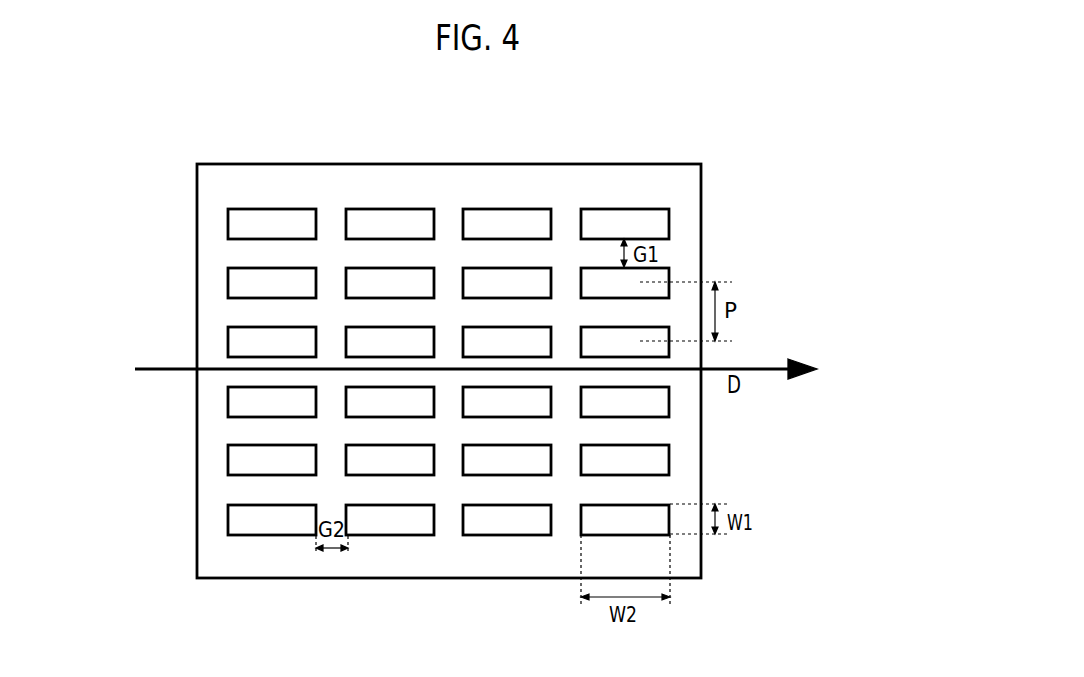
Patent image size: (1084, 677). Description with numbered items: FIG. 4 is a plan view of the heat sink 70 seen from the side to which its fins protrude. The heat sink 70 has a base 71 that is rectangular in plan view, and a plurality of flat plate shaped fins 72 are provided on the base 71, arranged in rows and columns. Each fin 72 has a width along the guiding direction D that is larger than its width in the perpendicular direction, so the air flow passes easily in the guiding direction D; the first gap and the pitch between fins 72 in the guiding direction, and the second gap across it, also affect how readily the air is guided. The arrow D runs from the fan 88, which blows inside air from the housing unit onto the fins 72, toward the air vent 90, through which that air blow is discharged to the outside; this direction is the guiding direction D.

The heat sink 70 is at (637, 131).
The base 71 is at (215, 182).
The fin 72 is at (230, 233).
The fan 88 is at (85, 370).
The air vent 90 is at (892, 370).